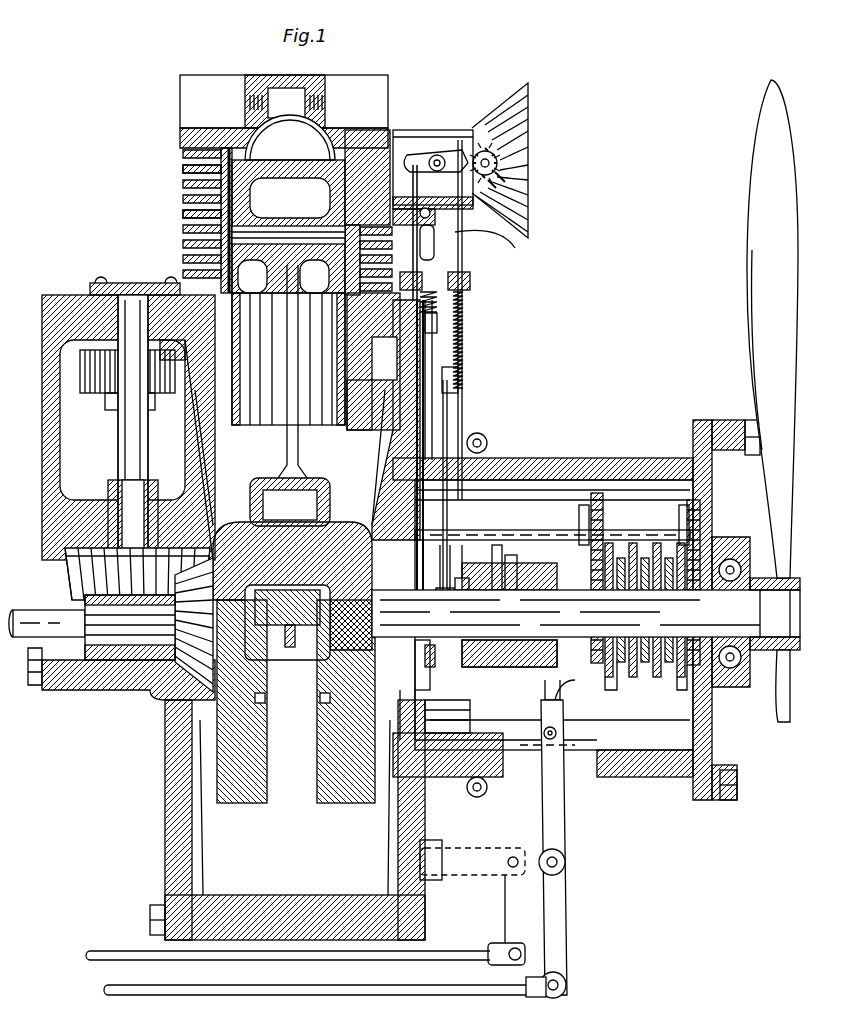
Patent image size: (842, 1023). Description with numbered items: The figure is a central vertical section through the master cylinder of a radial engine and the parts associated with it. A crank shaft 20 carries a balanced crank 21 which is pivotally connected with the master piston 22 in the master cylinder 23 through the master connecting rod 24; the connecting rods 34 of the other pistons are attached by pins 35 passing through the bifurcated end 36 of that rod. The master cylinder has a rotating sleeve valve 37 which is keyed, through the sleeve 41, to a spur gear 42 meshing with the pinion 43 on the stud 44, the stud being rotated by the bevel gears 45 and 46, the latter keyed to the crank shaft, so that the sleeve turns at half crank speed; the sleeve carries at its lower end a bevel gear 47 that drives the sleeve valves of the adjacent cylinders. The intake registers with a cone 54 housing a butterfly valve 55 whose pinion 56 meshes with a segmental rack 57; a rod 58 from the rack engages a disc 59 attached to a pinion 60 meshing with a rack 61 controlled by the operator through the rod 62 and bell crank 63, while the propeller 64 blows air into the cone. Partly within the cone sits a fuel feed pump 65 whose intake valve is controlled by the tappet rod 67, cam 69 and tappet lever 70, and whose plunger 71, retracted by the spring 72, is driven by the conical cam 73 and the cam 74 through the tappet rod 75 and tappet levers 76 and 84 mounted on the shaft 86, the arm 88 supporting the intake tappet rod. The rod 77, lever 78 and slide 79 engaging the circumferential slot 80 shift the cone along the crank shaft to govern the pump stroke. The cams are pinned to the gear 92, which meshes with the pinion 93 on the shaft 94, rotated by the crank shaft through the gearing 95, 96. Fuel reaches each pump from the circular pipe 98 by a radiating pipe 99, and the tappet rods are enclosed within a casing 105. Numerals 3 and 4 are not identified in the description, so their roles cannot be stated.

The crankcase housing 3 is at (500, 455).
The cylinder 4 is at (197, 152).
The crank shaft 20 is at (350, 522).
The balanced crank 21 is at (250, 685).
The master piston 22 is at (298, 172).
The master cylinder 23 is at (185, 172).
The master connecting rod 24 is at (287, 440).
The connecting rod 34 is at (302, 635).
The pin 35 is at (280, 612).
The bifurcated end 36 is at (325, 655).
The sleeve valve 37 is at (185, 207).
The sleeve 41 is at (365, 408).
The spur gear 42 is at (211, 427).
The pinion 43 is at (100, 385).
The stud 44 is at (130, 455).
The bevel gear 45 is at (60, 580).
The bevel gear 46 is at (160, 690).
The bevel gear 47 is at (228, 425).
The cone 54 is at (530, 105).
The butterfly valve 55 is at (510, 178).
The pinion 56 is at (489, 150).
The segmental rack 57 is at (447, 155).
The rod 58 is at (420, 268).
The disc 59 is at (425, 700).
The pinion 60 is at (432, 695).
The rack 61 is at (440, 705).
The rod 62 is at (95, 956).
The bell crank 63 is at (505, 904).
The propeller 64 is at (752, 183).
The fuel feed pump 65 is at (452, 246).
The tappet rod 67 is at (460, 364).
The cam 69 is at (628, 680).
The tappet lever 70 is at (610, 560).
The plunger 71 is at (458, 303).
The spring 72 is at (458, 322).
The conical cam 73 is at (512, 668).
The cam 74 is at (605, 690).
The tappet rod 75 is at (452, 408).
The tappet lever 76 is at (497, 560).
The rod 77 is at (197, 992).
The lever 78 is at (558, 807).
The slide 79 is at (555, 700).
The circumferential slot 80 is at (540, 575).
The arm 84 is at (462, 585).
The shaft 86 is at (510, 572).
The arm 88 is at (445, 575).
The gear 92 is at (660, 690).
The pinion 93 is at (690, 520).
The shaft 94 is at (530, 535).
The gearing 95 is at (598, 520).
The gearing 96 is at (560, 700).
The circular pipe 98 is at (488, 443).
The pipe 99 is at (495, 248).
The casing 105 is at (462, 345).